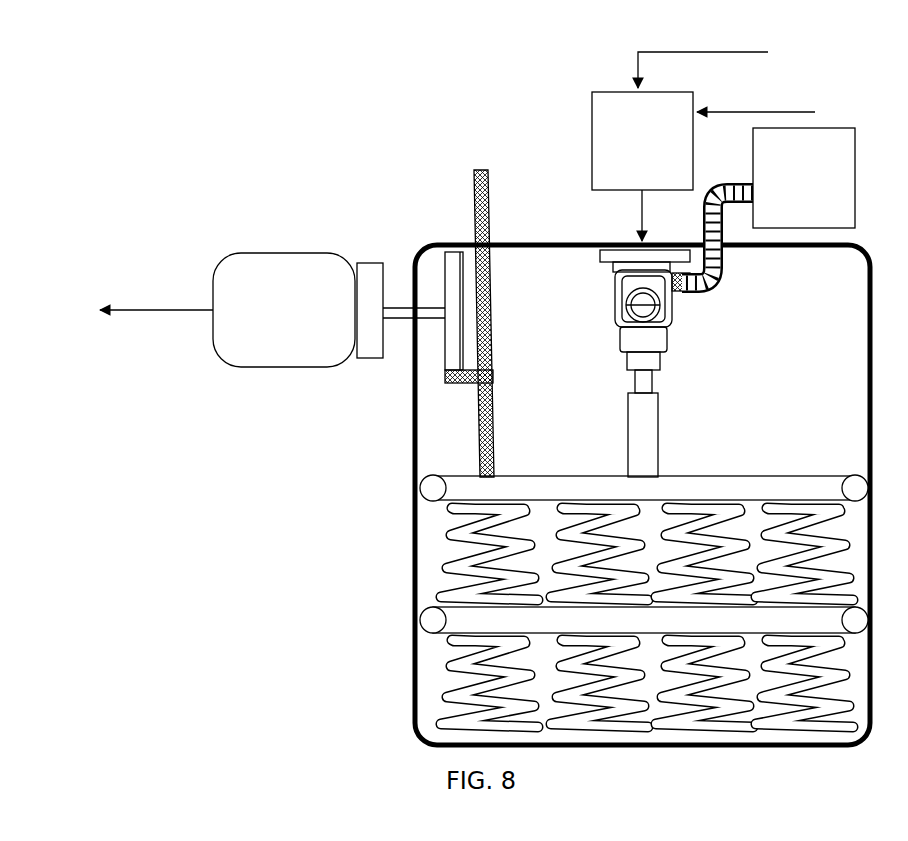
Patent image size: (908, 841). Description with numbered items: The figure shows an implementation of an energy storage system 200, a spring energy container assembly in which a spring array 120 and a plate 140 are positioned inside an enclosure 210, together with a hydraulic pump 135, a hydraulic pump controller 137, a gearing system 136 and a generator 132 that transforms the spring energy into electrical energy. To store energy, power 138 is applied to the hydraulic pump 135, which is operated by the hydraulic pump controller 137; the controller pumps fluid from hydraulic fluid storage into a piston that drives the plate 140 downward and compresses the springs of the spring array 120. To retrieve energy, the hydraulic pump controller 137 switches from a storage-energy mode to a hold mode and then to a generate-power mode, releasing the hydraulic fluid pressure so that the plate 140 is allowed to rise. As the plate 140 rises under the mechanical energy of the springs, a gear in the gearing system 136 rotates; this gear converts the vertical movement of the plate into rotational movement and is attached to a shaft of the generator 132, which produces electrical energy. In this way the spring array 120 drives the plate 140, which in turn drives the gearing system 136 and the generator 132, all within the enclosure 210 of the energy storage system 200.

The energy storage system 200 is at (57, 432).
The enclosure 210 is at (412, 451).
The generator 132 is at (275, 368).
The gearing system 136 is at (498, 392).
The plate 140 is at (410, 612).
The spring array 120 is at (410, 705).
The hydraulic pump 135 is at (686, 363).
The hydraulic pump controller 137 is at (590, 128).
The power 138 is at (822, 101).